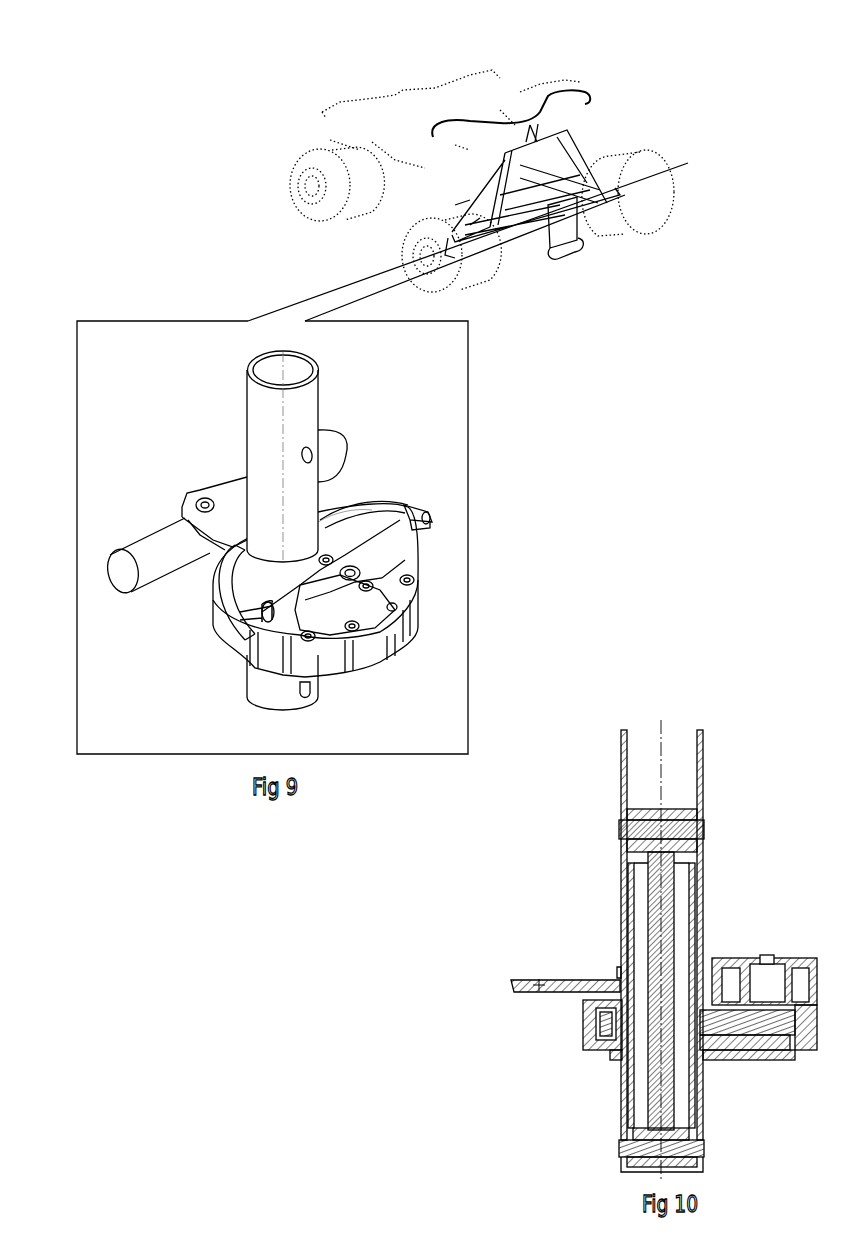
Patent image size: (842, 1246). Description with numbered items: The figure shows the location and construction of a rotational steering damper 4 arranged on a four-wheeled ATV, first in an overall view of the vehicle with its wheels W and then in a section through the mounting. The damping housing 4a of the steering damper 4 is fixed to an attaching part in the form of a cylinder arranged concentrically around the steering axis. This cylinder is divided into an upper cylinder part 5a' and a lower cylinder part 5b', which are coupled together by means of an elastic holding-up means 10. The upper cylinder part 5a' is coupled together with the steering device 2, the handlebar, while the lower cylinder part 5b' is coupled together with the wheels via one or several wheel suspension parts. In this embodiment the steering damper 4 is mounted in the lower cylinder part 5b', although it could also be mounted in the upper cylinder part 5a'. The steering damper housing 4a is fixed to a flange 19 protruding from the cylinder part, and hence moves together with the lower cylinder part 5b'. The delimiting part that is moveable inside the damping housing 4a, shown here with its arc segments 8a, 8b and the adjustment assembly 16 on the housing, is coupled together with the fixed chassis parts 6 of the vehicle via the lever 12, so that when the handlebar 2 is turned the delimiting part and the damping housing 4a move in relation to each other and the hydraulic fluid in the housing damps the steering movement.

In FIG. 9, the steering device 2 is at (567, 87).
In FIG. 9, the steering damper 4 is at (425, 608).
In FIG. 9, the wheel W is at (652, 221).
In FIG. 9, the lever 12 is at (216, 524).
In FIG. 10, the lever 12 is at (568, 980).
In FIG. 9, the frame/chassis 6 is at (153, 545).
In FIG. 9, the upper arc segment 8a is at (352, 513).
In FIG. 9, the lower arc segment 8b is at (233, 575).
In FIG. 9, the adjustment assembly 16 is at (505, 537).
In FIG. 10, the upper cylinder part 5a' is at (583, 935).
In FIG. 10, the elastic holding-up means 10 is at (650, 955).
In FIG. 10, the lower cylinder part 5b' is at (582, 1116).
In FIG. 10, the flange 19 is at (732, 1062).
In FIG. 10, the damping housing 4a is at (803, 1050).